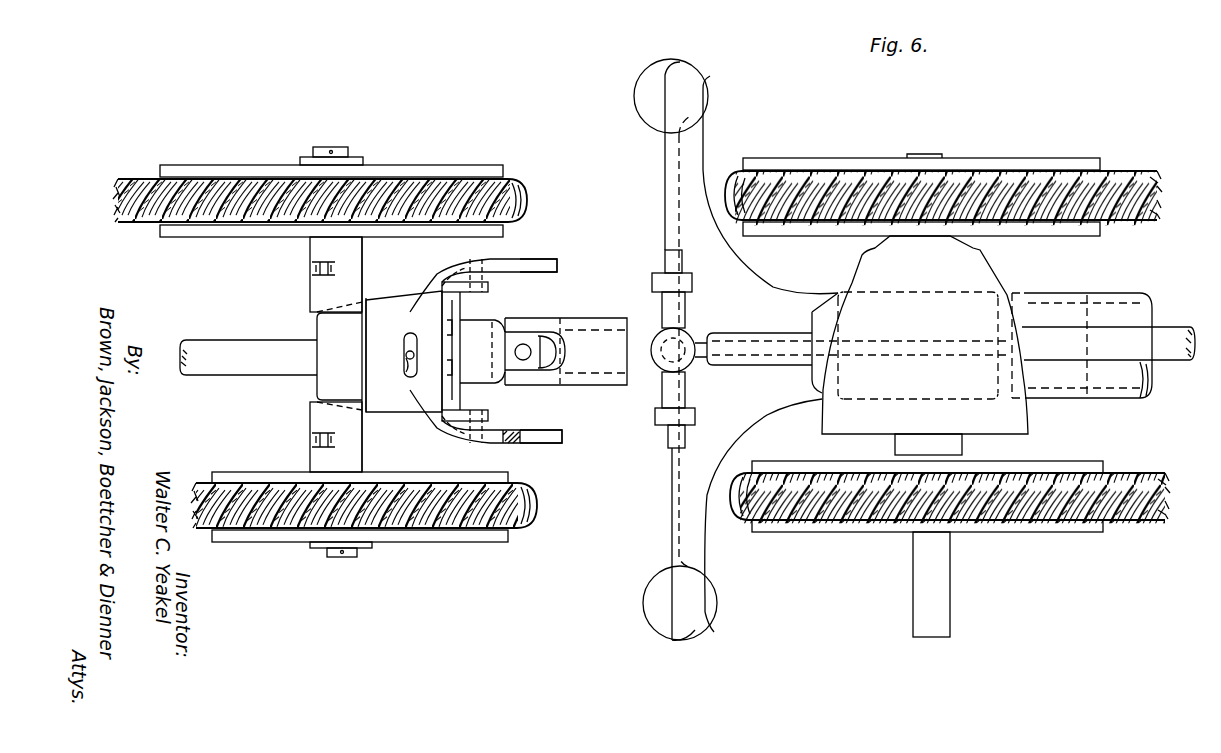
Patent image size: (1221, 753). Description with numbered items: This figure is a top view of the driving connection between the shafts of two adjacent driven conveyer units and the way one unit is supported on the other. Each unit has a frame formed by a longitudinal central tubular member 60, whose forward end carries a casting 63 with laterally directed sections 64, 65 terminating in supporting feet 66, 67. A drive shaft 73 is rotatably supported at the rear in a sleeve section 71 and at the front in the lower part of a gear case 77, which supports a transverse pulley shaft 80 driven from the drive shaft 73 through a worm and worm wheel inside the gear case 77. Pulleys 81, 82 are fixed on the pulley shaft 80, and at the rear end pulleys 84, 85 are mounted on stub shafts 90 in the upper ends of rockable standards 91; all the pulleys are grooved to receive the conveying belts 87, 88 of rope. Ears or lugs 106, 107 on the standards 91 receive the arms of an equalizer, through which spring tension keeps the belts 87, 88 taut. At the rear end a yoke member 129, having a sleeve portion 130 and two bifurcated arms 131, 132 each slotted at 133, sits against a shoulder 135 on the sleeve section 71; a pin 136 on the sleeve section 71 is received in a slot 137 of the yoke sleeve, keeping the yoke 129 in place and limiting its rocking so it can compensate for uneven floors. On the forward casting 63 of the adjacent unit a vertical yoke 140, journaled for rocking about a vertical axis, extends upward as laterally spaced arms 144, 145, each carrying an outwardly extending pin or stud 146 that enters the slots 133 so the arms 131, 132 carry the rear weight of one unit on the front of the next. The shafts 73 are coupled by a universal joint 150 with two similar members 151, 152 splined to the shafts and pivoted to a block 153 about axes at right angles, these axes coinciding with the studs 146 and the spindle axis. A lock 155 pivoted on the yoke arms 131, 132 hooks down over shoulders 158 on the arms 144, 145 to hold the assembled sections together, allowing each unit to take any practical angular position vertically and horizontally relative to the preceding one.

The tubular member 60 is at (1130, 383).
The casting 63 is at (765, 408).
The laterally directed section 64 is at (695, 497).
The laterally directed section 65 is at (668, 200).
The supporting foot 66 is at (652, 590).
The supporting foot 67 is at (640, 110).
The sleeve section 71 is at (323, 386).
The drive shaft 73 is at (228, 345).
The gear case 77 is at (978, 266).
The pulley shaft 80 is at (938, 582).
The pulley 81 is at (1040, 532).
The pulley 82 is at (995, 158).
The pulley 84 is at (462, 542).
The pulley 85 is at (428, 165).
The conveying belt 87 is at (262, 528).
The conveying belt 88 is at (135, 190).
The stub shaft 90 is at (338, 156).
The rockable standard 91 is at (315, 297).
The ear or lug 106 is at (318, 265).
The ear or lug 107 is at (320, 446).
The yoke member 129 is at (421, 283).
The sleeve portion 130 is at (403, 405).
The bifurcated arm 131 is at (497, 444).
The bifurcated arm 132 is at (549, 264).
The slot 133 is at (514, 265).
The shoulder 135 is at (364, 360).
The pin 136 is at (408, 350).
The slot 137 is at (407, 368).
The vertical yoke 140 is at (701, 333).
The arm 144 is at (683, 390).
The arm 145 is at (682, 308).
The pin or stud 146 is at (668, 262).
The universal joint 150 is at (528, 313).
The universal joint member 151 is at (473, 332).
The universal joint member 152 is at (603, 326).
The block 153 is at (546, 338).
The lock 155 is at (471, 397).
The shoulder 158 is at (693, 284).